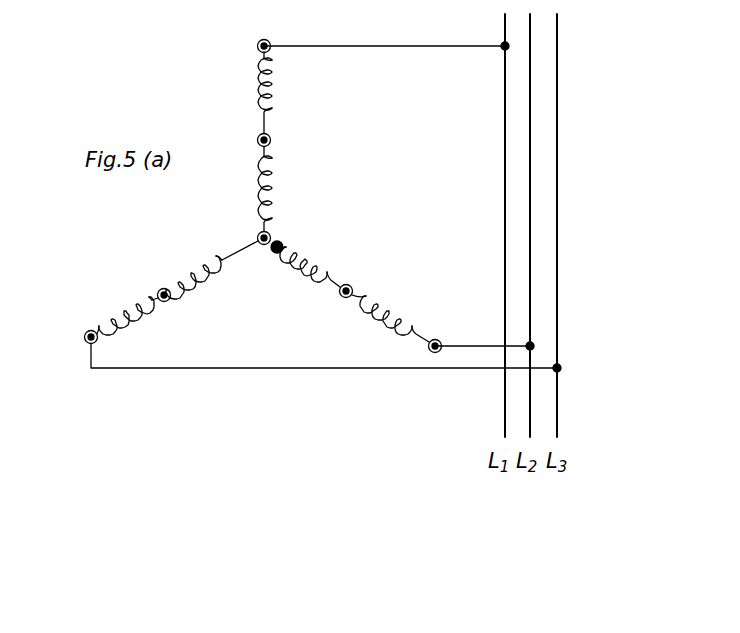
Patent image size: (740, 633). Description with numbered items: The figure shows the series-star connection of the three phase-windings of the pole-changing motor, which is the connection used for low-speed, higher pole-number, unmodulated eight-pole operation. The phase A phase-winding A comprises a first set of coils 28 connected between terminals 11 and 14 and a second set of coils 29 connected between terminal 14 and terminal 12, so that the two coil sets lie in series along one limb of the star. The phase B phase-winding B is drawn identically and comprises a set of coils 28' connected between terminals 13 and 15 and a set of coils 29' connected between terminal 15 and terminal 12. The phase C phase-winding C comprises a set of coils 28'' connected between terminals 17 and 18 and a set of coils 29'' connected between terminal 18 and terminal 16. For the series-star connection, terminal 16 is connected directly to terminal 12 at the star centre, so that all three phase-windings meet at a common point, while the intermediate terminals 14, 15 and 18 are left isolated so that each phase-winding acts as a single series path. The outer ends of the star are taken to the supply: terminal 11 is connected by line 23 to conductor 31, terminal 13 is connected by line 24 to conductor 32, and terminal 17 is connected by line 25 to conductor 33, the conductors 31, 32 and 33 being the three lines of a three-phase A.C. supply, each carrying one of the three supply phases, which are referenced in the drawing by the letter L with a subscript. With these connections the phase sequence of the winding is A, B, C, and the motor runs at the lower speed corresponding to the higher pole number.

The terminal 11 is at (257, 46).
The terminal 12 is at (258, 234).
The terminal 13 is at (438, 340).
The terminal 14 is at (271, 140).
The terminal 15 is at (349, 285).
The terminal 16 is at (277, 254).
The terminal 17 is at (84, 337).
The terminal 18 is at (158, 291).
The line 23 is at (422, 46).
The line 24 is at (480, 346).
The line 25 is at (312, 369).
The first set of coils 28 is at (289, 84).
The second set of coils 29 is at (289, 188).
The set of coils 28' is at (395, 308).
The set of coils 29' is at (311, 252).
The set of coils 28'' is at (133, 329).
The set of coils 29'' is at (198, 294).
The conductor 31 is at (505, 128).
The conductor 32 is at (531, 172).
The conductor 33 is at (558, 130).
The phase A phase-winding A is at (273, 112).
The phase B phase-winding B is at (374, 316).
The phase C phase-winding C is at (121, 318).